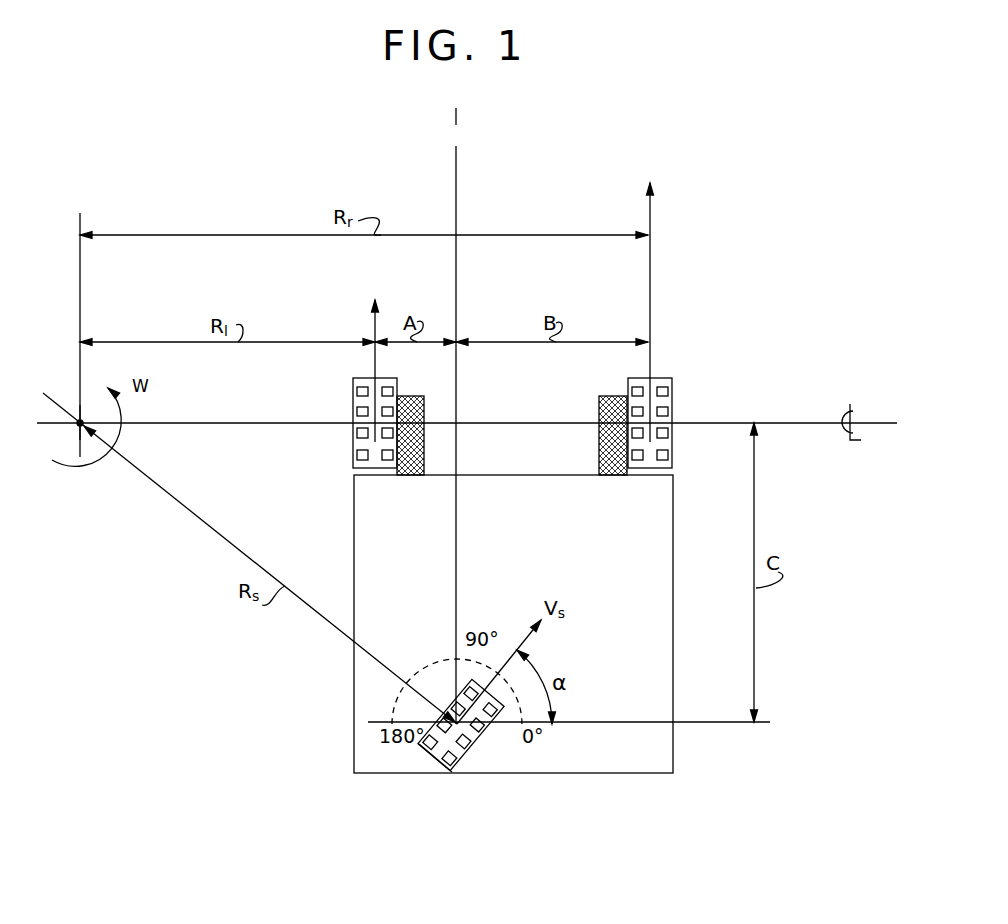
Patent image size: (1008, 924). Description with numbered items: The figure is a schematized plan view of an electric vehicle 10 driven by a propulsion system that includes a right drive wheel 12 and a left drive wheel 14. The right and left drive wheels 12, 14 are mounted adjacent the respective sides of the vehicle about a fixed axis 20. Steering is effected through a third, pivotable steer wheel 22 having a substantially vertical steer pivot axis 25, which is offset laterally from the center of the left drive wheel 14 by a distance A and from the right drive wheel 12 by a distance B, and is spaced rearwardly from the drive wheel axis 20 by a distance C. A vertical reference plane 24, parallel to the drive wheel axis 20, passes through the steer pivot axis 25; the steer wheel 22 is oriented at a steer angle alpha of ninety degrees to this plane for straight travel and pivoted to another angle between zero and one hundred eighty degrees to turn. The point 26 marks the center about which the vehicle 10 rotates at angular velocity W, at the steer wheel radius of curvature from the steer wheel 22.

The electric vehicle 10 is at (539, 549).
The right drive wheel 12 is at (660, 374).
The left drive wheel 14 is at (352, 397).
The fixed axis 20 is at (280, 424).
The steer wheel 22 is at (465, 757).
The vertical reference plane 24 is at (705, 723).
The steer pivot axis 25 is at (432, 757).
The center of rotation 26 is at (79, 427).